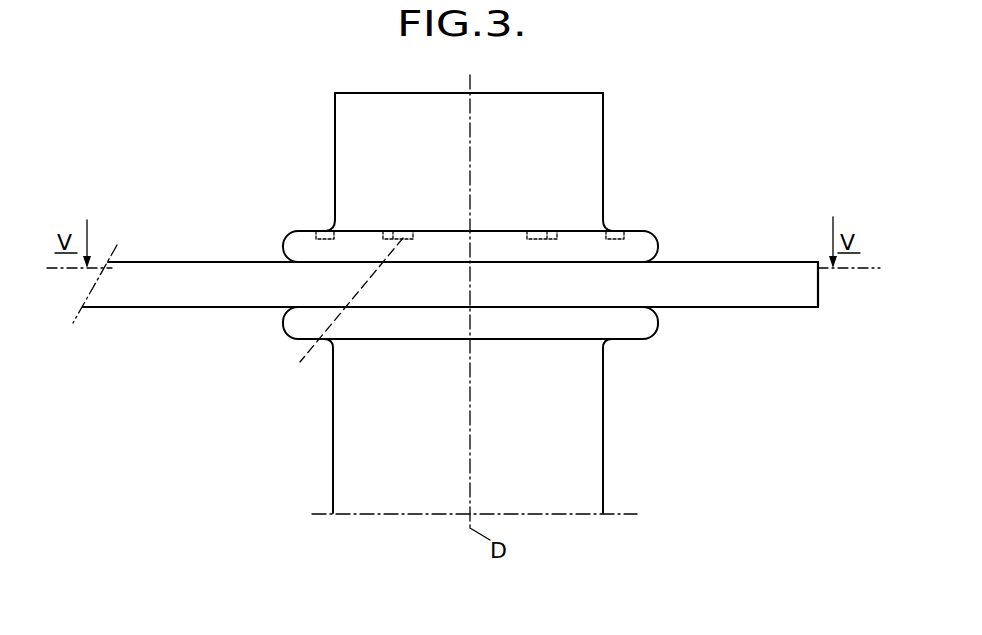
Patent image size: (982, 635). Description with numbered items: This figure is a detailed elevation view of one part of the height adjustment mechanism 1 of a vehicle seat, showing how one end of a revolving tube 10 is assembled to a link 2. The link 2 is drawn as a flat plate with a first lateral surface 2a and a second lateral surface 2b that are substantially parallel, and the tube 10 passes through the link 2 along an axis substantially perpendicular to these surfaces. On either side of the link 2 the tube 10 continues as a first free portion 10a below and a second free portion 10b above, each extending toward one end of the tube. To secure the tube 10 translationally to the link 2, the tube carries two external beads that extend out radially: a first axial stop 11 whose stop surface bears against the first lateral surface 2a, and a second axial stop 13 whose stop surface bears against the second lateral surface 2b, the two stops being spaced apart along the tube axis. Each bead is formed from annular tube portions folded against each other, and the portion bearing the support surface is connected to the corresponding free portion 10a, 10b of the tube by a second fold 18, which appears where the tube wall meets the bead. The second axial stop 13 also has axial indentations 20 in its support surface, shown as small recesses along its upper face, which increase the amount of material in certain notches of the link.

The height adjustment mechanism 1 is at (282, 203).
The link 2 is at (445, 287).
The first lateral surface 2a is at (728, 307).
The second lateral surface 2b is at (760, 262).
The revolving tube 10 is at (473, 293).
The first free portion 10a is at (605, 442).
The second free portion 10b is at (333, 143).
The first axial stop 11 is at (285, 333).
The second axial stop 13 is at (655, 233).
The second fold 18 is at (332, 227).
The axial indentations 20 is at (345, 316).